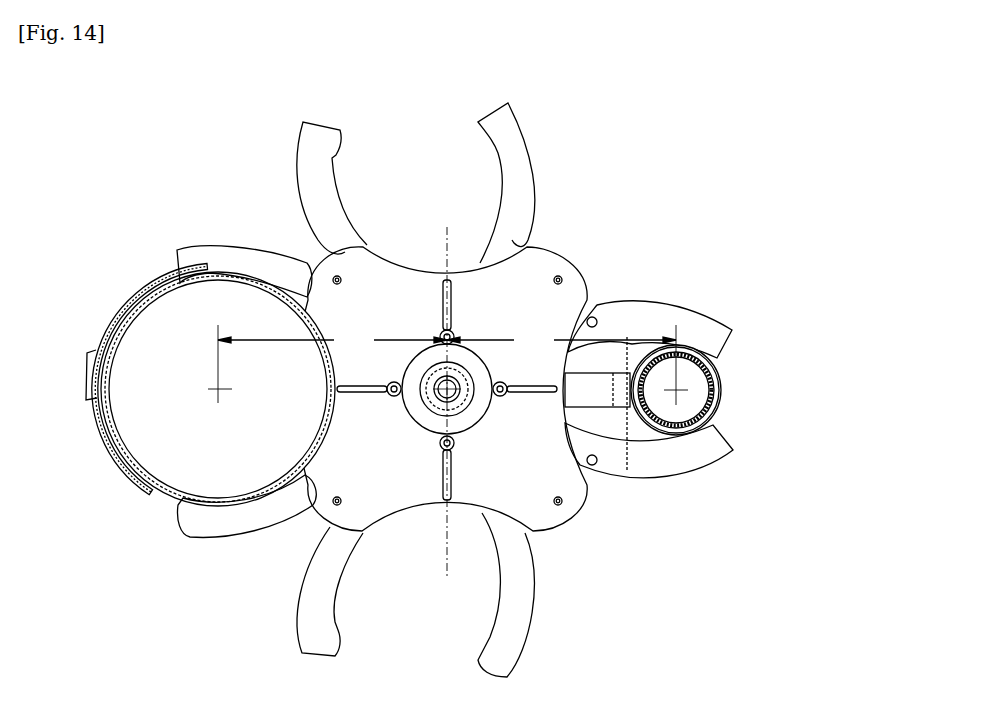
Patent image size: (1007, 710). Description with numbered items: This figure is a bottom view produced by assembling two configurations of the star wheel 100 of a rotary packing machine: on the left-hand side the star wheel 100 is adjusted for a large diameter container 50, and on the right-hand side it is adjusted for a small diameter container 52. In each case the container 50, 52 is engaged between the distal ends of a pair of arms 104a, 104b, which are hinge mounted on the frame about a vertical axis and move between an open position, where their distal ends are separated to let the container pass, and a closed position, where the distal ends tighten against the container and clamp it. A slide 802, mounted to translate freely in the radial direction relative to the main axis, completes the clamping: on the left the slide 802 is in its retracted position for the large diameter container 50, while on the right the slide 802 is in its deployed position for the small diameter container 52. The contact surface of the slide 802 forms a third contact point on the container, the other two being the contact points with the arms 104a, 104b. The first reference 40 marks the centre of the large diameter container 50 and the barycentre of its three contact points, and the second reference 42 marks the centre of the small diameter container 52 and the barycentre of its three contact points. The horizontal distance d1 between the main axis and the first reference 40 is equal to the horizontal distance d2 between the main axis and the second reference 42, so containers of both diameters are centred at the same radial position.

The star wheel 100 is at (648, 212).
The arm 104a is at (193, 523).
The arm 104b is at (207, 255).
The first reference 40 is at (93, 383).
The large diameter container 50 is at (292, 432).
The second reference 42 is at (680, 385).
The small diameter container 52 is at (700, 395).
The slide 802 is at (605, 428).
The horizontal distance d1 is at (332, 341).
The horizontal distance d2 is at (561, 341).